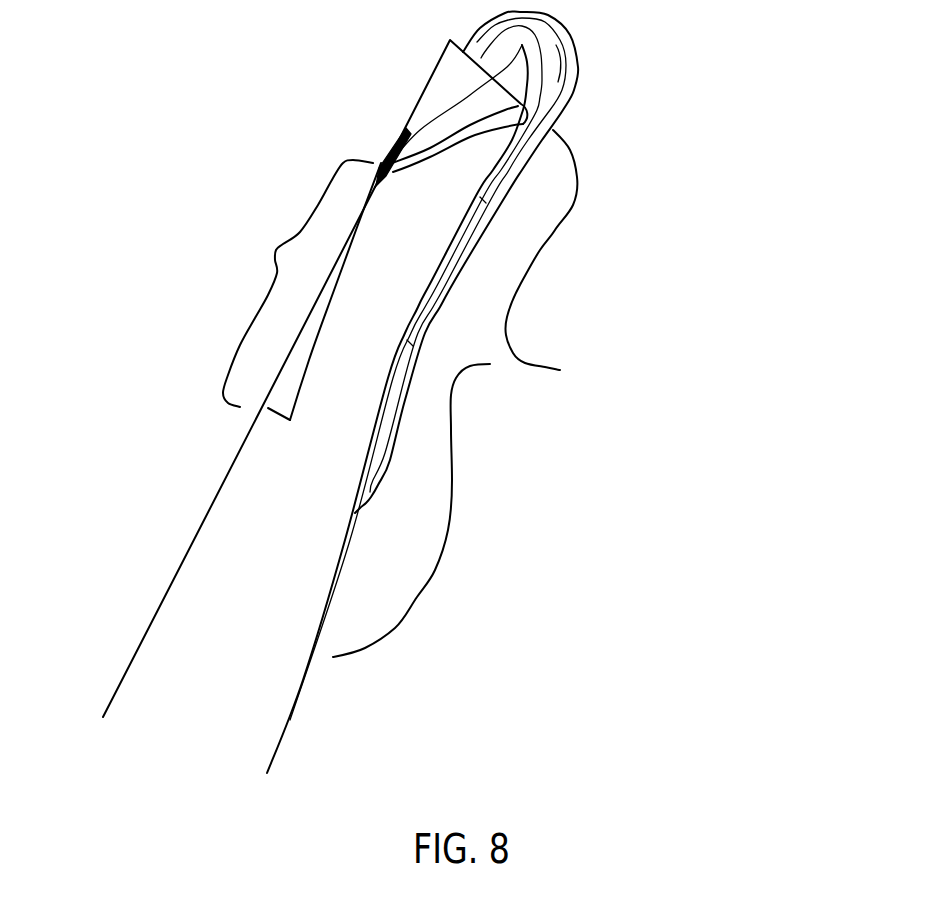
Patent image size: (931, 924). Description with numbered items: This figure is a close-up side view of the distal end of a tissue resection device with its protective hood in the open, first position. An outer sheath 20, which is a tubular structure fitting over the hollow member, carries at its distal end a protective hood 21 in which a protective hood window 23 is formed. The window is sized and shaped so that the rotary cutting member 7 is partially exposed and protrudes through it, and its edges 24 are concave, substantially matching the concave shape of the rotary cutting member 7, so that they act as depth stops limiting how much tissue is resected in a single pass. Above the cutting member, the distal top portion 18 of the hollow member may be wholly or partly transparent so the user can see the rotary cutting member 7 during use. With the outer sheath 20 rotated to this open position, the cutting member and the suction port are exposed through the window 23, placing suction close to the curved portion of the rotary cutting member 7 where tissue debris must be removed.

The rotary cutting member 7 is at (640, 70).
The distal top portion 18 is at (440, 75).
The outer sheath 20 is at (202, 578).
The protective hood 21 is at (277, 247).
The protective hood window 23 is at (550, 259).
The concave shaped edges 24 is at (410, 340).